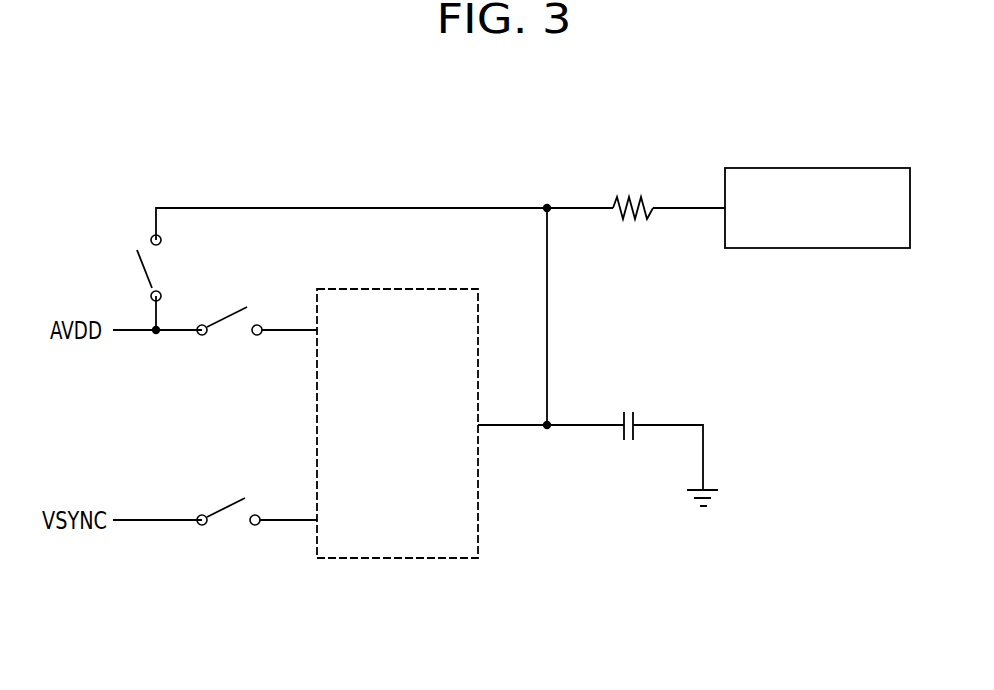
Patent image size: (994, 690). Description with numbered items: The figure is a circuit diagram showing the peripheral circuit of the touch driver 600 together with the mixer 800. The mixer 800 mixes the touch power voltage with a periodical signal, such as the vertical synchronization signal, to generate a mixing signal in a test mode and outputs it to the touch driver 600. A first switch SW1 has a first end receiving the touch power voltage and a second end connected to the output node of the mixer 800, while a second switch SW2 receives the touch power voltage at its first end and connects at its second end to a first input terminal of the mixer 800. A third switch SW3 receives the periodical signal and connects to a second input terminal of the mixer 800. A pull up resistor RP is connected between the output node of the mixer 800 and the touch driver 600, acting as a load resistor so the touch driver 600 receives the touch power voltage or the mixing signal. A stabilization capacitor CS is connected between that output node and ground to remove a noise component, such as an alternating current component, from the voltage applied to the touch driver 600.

The touch driver 600 is at (813, 248).
The mixer 800 is at (395, 558).
The first switch SW1 is at (166, 268).
The second switch SW2 is at (229, 338).
The third switch SW3 is at (228, 528).
The pull up resistor RP is at (633, 195).
The stabilization capacitor CS is at (627, 440).